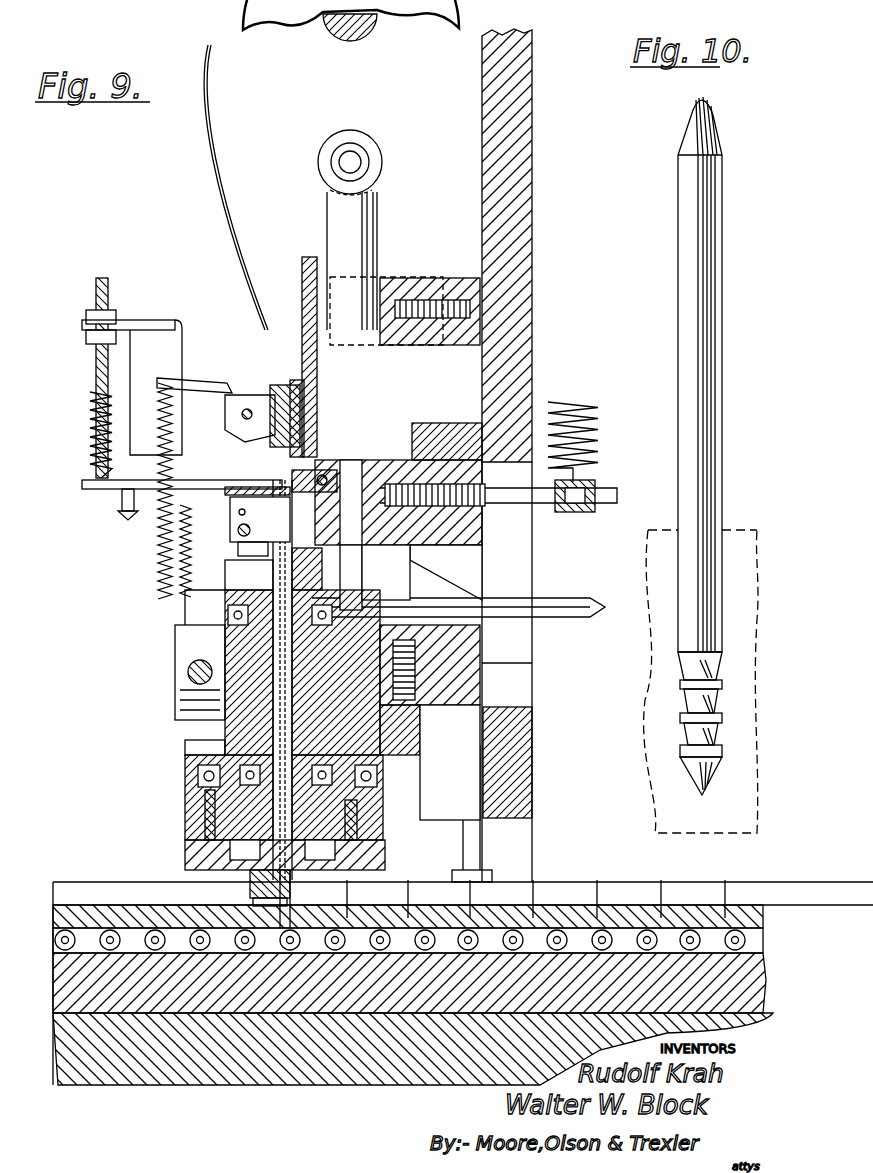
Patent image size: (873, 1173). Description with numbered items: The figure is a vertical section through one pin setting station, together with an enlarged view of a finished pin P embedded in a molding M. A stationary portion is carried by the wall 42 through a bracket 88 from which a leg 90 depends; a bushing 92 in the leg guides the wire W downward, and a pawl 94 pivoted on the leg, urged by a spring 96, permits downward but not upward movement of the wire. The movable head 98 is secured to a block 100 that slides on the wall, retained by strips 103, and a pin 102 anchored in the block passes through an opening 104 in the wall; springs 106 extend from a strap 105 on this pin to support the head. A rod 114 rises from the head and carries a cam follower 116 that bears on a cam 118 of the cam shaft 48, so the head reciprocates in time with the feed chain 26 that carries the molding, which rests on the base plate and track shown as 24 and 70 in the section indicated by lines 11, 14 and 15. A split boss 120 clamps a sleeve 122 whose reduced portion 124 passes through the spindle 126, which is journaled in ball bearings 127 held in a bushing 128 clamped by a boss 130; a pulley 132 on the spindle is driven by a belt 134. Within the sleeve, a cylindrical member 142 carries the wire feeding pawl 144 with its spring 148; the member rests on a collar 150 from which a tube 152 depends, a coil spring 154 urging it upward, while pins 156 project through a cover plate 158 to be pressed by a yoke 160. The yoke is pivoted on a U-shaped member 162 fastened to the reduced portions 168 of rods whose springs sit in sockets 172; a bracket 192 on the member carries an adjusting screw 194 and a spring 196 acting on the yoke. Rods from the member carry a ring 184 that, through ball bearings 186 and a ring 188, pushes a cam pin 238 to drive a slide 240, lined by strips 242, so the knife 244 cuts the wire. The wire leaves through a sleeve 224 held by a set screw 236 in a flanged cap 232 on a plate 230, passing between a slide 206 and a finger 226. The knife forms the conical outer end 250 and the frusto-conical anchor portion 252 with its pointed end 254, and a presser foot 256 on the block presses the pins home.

In FIG. 9, the section line 11- 11 is at (277, 232).
In FIG. 9, the section line 14- 14 is at (88, 413).
In FIG. 9, the section line 15- 15 is at (88, 878).
In FIG. 9, the base plate 24 is at (115, 1075).
In FIG. 9, the feed chain 26 is at (432, 960).
In FIG. 9, the wall 42 is at (512, 140).
In FIG. 9, the cam shaft 48 is at (360, 40).
In FIG. 9, the conveyor chain 70 is at (750, 990).
In FIG. 9, the bracket 88 is at (417, 285).
In FIG. 9, the leg 90 is at (312, 392).
In FIG. 9, the bushing 92 is at (278, 384).
In FIG. 9, the pawl 94 is at (195, 380).
In FIG. 9, the spring 96 is at (157, 548).
In FIG. 9, the head 98 is at (390, 460).
In FIG. 9, the block 100 is at (500, 665).
In FIG. 9, the pin 102 is at (548, 507).
In FIG. 9, the retaining strips 103 is at (422, 422).
In FIG. 9, the opening 104 is at (505, 706).
In FIG. 9, the strap 105 is at (592, 482).
In FIG. 9, the springs 106 is at (597, 402).
In FIG. 9, the rod 114 is at (365, 212).
In FIG. 9, the cam follower 116 is at (383, 160).
In FIG. 9, the cam 118 is at (412, 95).
In FIG. 9, the boss 120 is at (272, 556).
In FIG. 9, the sleeve 122 is at (250, 556).
In FIG. 9, the sleeve portion 124 is at (300, 580).
In FIG. 9, the spindle 126 is at (240, 700).
In FIG. 9, the ball bearings 127 is at (178, 628).
In FIG. 9, the bushing 128 is at (238, 675).
In FIG. 9, the boss 130 is at (180, 640).
In FIG. 9, the pulley 132 is at (225, 612).
In FIG. 9, the belt 134 is at (565, 598).
In FIG. 9, the cylindrical member 142 is at (244, 532).
In FIG. 9, the wire feeding pawl 144 is at (246, 512).
In FIG. 9, the spring 148 is at (230, 598).
In FIG. 9, the collar 150 is at (249, 575).
In FIG. 9, the tube 152 is at (185, 748).
In FIG. 9, the coil spring 154 is at (300, 565).
In FIG. 9, the pins 156 is at (262, 486).
In FIG. 9, the cover plate 158 is at (300, 490).
In FIG. 9, the yoke 160 is at (88, 484).
In FIG. 9, the U-shaped member 162 is at (226, 426).
In FIG. 9, the reduced lower portions 168 is at (366, 578).
In FIG. 9, the sockets 172 is at (470, 636).
In FIG. 9, the ring 184 is at (383, 750).
In FIG. 9, the ball bearings 186 is at (197, 770).
In FIG. 9, the ring 188 is at (238, 780).
In FIG. 9, the bracket 192 is at (140, 322).
In FIG. 9, the adjusting screw 194 is at (105, 276).
In FIG. 9, the spring 196 is at (88, 440).
In FIG. 9, the slide 206 is at (283, 905).
In FIG. 9, the sleeve 224 is at (345, 905).
In FIG. 9, the finger 226 is at (262, 930).
In FIG. 9, the plate 230 is at (360, 815).
In FIG. 9, the flanged cap 232 is at (188, 852).
In FIG. 9, the set screw 236 is at (318, 905).
In FIG. 9, the cam pin 238 is at (204, 803).
In FIG. 9, the slide 240 is at (210, 886).
In FIG. 9, the strips 242 is at (250, 885).
In FIG. 9, the knife 244 is at (250, 912).
In FIG. 10, the outer end 250 is at (690, 122).
In FIG. 10, the anchor portion 252 is at (685, 735).
In FIG. 10, the conically pointed end 254 is at (698, 785).
In FIG. 9, the presser foot 256 is at (475, 840).
In FIG. 9, the wire W is at (212, 198).
In FIG. 9, the pin P is at (480, 898).
In FIG. 10, the pin P is at (680, 246).
In FIG. 9, the molding M is at (180, 857).
In FIG. 10, the molding M is at (744, 540).